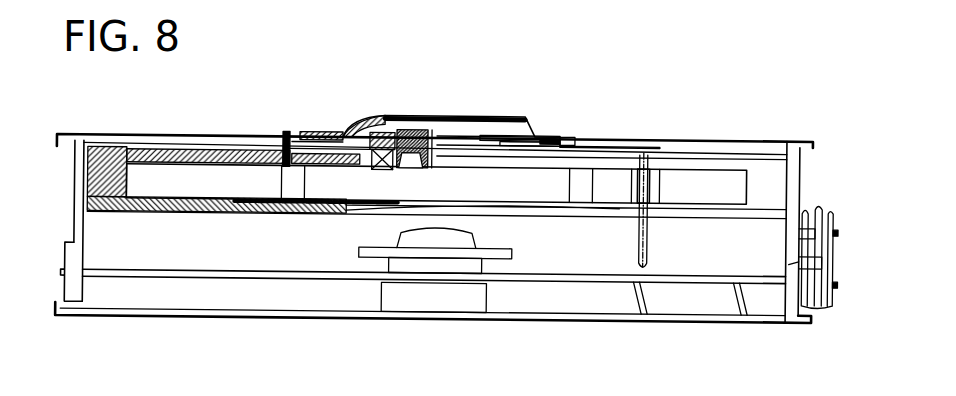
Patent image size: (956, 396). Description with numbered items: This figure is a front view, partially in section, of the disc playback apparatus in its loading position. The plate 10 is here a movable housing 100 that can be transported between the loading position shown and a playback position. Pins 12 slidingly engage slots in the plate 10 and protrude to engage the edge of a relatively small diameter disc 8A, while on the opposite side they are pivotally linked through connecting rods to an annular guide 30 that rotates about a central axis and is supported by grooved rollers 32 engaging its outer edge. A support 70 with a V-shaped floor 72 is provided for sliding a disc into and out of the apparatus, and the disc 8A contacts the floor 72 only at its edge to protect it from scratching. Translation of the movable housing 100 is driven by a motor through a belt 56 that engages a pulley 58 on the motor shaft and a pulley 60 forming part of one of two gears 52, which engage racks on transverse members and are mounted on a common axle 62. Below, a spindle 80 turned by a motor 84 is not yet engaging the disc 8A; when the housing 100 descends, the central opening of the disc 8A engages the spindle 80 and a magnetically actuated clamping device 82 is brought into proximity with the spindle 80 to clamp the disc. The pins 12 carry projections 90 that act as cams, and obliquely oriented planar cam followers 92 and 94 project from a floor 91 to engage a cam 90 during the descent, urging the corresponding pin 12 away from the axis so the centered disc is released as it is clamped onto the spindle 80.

The disc 8A is at (378, 194).
The plate 10 is at (685, 160).
The pins 12 is at (297, 182).
The guide 30 is at (588, 141).
The rollers 32 is at (278, 132).
The gear 52 is at (72, 282).
The belt 56 is at (828, 308).
The pulley 58 is at (823, 210).
The pulley 60 is at (830, 268).
The common axle 62 is at (230, 270).
The support 70 is at (150, 213).
The V-shaped floor 72 is at (205, 197).
The spindle 80 is at (513, 251).
The magnetically actuated clamping device 82 is at (400, 106).
The motor 84 is at (397, 307).
The projections 90 is at (652, 240).
The floor 91 is at (558, 316).
The cam follower 92 is at (647, 318).
The cam follower 94 is at (745, 320).
The movable housing 100 is at (107, 165).